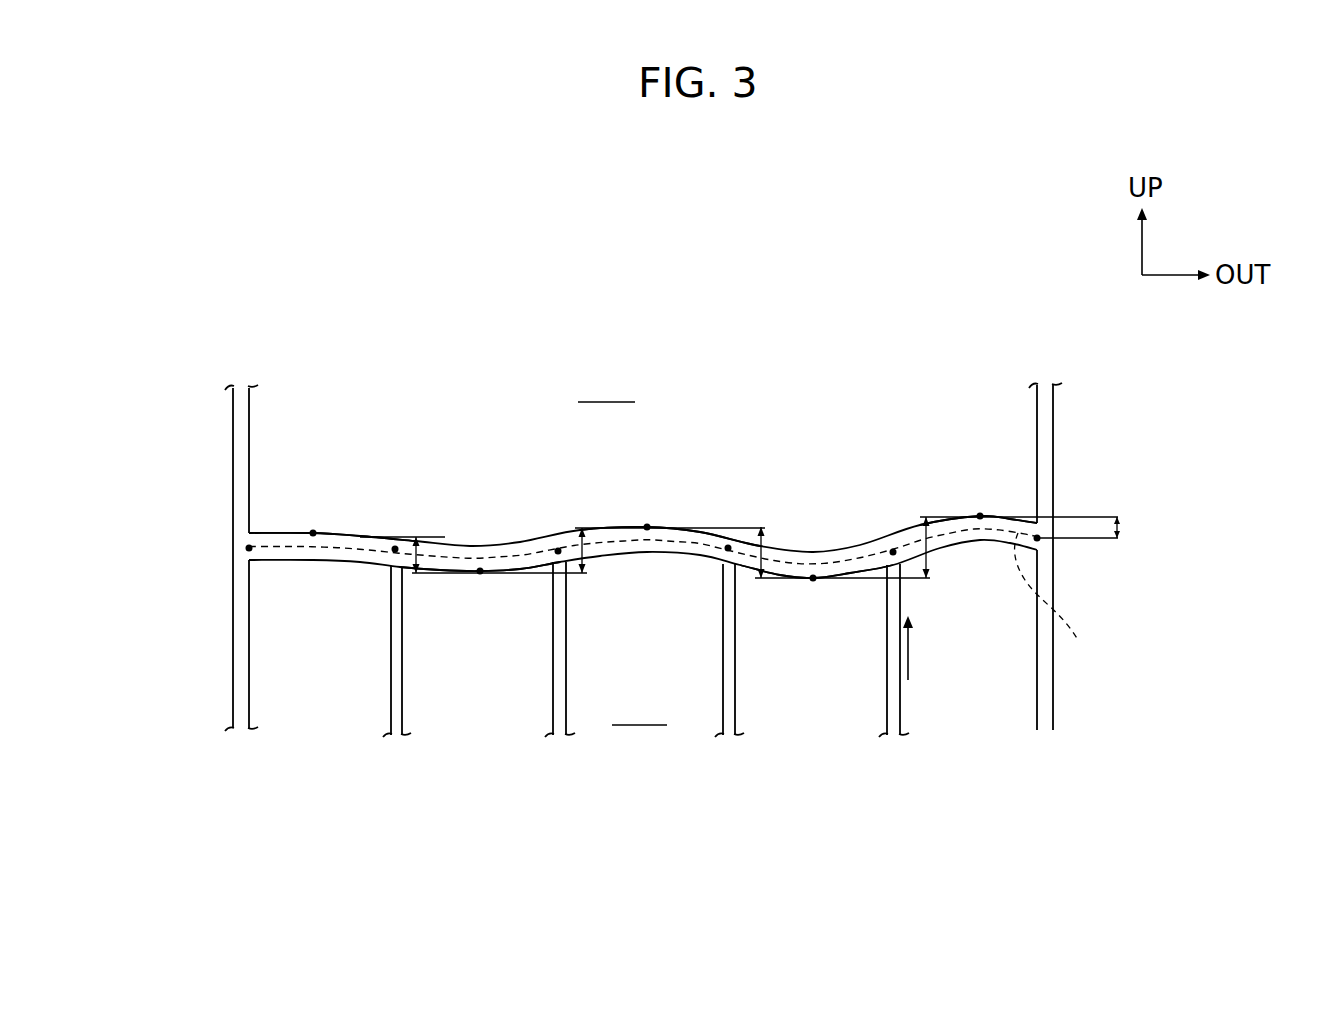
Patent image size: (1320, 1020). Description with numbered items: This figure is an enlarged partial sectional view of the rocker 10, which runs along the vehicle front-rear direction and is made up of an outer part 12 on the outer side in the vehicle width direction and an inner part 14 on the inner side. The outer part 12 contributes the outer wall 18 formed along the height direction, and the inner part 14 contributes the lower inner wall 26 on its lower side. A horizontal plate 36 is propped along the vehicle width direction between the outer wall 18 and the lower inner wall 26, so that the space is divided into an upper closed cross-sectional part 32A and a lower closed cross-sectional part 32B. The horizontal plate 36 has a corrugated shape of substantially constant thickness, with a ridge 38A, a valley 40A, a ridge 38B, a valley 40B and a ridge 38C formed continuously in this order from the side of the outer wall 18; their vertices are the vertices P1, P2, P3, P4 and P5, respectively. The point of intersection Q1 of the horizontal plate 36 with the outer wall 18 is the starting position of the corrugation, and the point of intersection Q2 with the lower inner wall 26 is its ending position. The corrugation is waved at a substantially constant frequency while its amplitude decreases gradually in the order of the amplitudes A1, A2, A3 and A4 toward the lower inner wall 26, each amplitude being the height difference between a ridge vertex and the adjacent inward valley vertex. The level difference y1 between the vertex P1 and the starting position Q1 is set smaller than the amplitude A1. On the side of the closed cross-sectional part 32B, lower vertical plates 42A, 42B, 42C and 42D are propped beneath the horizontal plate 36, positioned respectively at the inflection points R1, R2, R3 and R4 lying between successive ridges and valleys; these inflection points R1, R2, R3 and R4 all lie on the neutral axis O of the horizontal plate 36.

The rocker 10 is at (1124, 398).
The outer part 12 is at (1066, 445).
The inner part 14 is at (186, 418).
The outer wall 18 is at (1045, 477).
The lower inner wall 26 is at (240, 478).
The closed cross-sectional part 32A is at (606, 387).
The closed cross-sectional part 32B is at (639, 710).
The horizontal plate 36 is at (634, 555).
The ridge 38A is at (945, 528).
The ridge 38B is at (680, 533).
The ridge 38C is at (358, 533).
The valley 40A is at (795, 576).
The valley 40B is at (507, 568).
The lower vertical plate 42A is at (898, 705).
The lower vertical plate 42B is at (733, 705).
The lower vertical plate 42C is at (563, 705).
The lower vertical plate 42D is at (397, 705).
The vertex P1 is at (980, 516).
The vertex P2 is at (813, 578).
The vertex P3 is at (647, 527).
The vertex P4 is at (480, 571).
The vertex P5 is at (313, 533).
The point of intersection Q1 is at (1037, 538).
The point of intersection Q2 is at (249, 548).
The inflection point R1 is at (893, 553).
The inflection point R2 is at (728, 548).
The inflection point R3 is at (558, 551).
The inflection point R4 is at (395, 549).
The amplitude A1 is at (922, 540).
The amplitude A2 is at (763, 540).
The amplitude A3 is at (578, 528).
The amplitude A4 is at (443, 537).
The level difference y1 is at (1119, 528).
The neutral axis O is at (1054, 604).